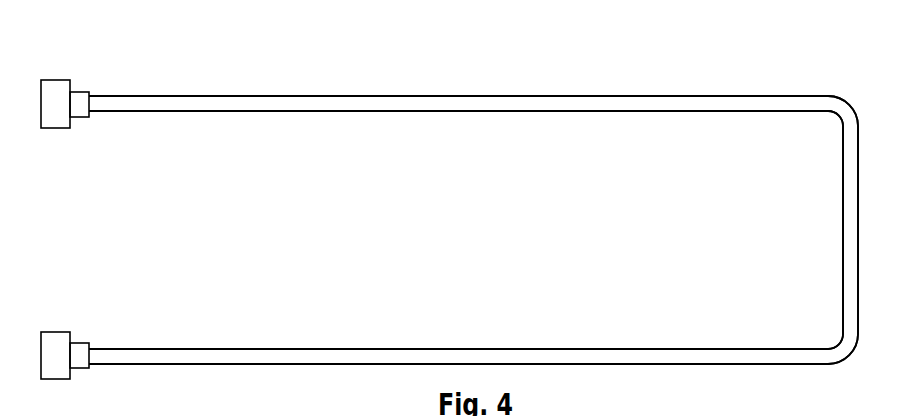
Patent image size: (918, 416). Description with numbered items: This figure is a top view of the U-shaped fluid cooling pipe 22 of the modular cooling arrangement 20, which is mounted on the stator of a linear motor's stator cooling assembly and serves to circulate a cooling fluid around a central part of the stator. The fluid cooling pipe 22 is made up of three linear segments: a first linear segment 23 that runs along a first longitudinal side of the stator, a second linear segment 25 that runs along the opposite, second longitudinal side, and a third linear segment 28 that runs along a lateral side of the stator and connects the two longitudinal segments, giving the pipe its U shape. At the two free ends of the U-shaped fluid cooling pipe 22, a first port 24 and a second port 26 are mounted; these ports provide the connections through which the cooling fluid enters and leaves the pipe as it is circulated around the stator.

The modular cooling arrangement 20 is at (747, 409).
The U-shaped fluid cooling pipe 22 is at (297, 75).
The first linear segment 23 is at (387, 102).
The first port 24 is at (56, 103).
The second linear segment 25 is at (375, 353).
The second port 26 is at (59, 348).
The third linear segment 28 is at (844, 225).